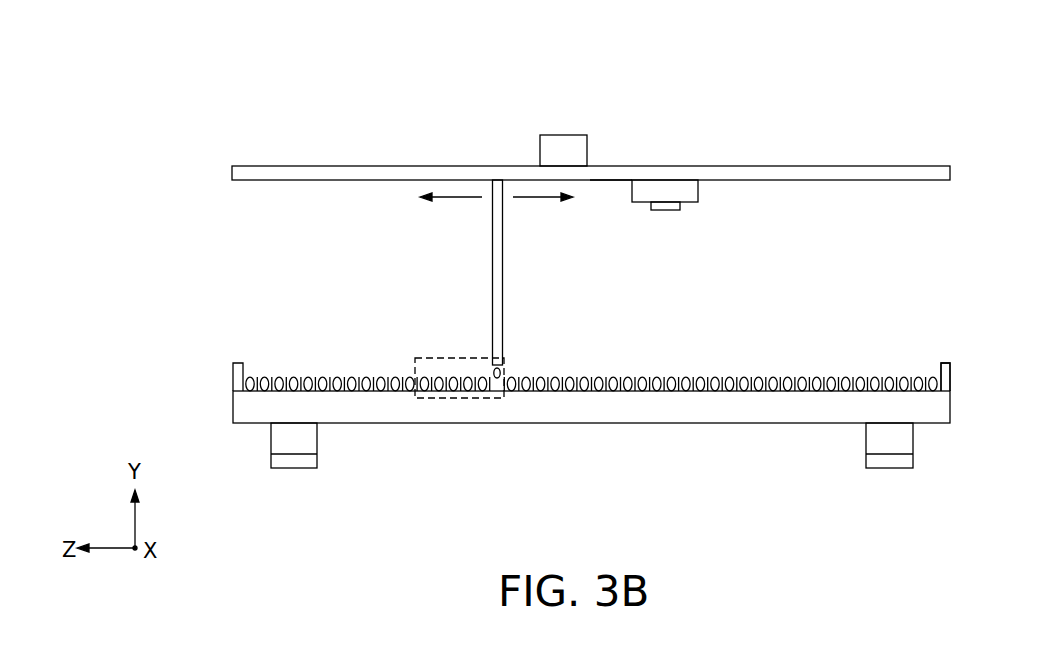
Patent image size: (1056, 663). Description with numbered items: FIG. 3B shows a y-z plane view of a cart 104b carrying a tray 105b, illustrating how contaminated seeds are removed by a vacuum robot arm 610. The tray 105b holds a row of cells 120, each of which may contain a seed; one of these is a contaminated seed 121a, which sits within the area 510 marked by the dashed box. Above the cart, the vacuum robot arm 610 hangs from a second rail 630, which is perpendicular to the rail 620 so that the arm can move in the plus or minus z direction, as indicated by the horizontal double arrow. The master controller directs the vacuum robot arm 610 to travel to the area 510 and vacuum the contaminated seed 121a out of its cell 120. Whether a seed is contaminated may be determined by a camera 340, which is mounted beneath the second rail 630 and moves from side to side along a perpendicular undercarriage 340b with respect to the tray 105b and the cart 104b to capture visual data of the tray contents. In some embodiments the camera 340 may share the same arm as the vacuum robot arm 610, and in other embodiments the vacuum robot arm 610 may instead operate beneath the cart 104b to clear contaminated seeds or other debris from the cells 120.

The second rail 630 is at (591, 221).
The rail 620 is at (603, 111).
The vacuum robot arm 610 is at (557, 272).
The camera 340 is at (690, 248).
The perpendicular undercarriage 340b is at (627, 233).
The cart 104b is at (591, 453).
The tray 105b is at (995, 325).
The cell 120 is at (591, 325).
The area 510 is at (478, 432).
The contaminated seed 121a is at (500, 372).